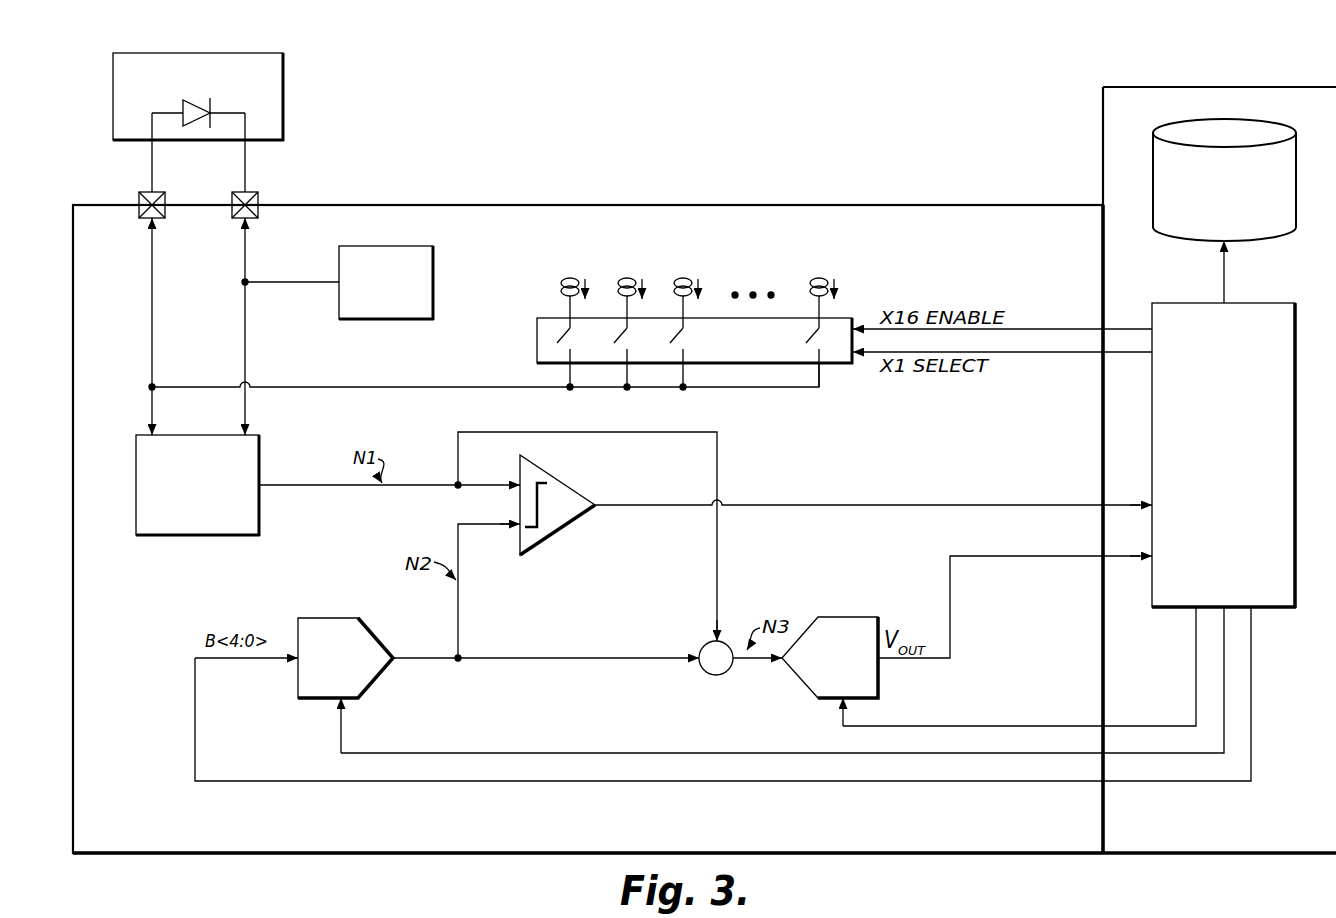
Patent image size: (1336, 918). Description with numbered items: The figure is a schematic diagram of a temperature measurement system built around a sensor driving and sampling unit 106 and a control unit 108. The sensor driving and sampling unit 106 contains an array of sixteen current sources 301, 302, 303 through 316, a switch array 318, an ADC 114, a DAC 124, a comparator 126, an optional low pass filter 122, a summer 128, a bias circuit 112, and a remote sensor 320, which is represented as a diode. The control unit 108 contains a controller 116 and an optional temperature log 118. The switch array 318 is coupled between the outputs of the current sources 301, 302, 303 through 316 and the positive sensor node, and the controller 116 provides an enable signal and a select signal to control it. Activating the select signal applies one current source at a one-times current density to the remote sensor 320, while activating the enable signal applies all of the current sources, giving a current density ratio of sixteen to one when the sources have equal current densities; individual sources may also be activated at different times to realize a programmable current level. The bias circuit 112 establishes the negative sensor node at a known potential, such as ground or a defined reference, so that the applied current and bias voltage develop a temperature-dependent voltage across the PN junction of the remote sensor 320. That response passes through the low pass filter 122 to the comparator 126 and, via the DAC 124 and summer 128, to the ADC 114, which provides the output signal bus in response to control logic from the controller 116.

The sensor driving and sampling unit 106 is at (1005, 845).
The control unit 108 is at (1316, 814).
The bias circuit 112 is at (388, 319).
The ADC 114 is at (873, 699).
The controller 116 is at (1273, 477).
The temperature log 118 is at (1276, 229).
The low pass filter 122 is at (233, 521).
The DAC 124 is at (333, 696).
The comparator 126 is at (565, 525).
The summer 128 is at (703, 675).
The current source 301 is at (566, 266).
The current source 302 is at (623, 266).
The current source 303 is at (679, 266).
The current source 316 is at (815, 266).
The switch array 318 is at (768, 351).
The remote sensor 320 is at (284, 80).